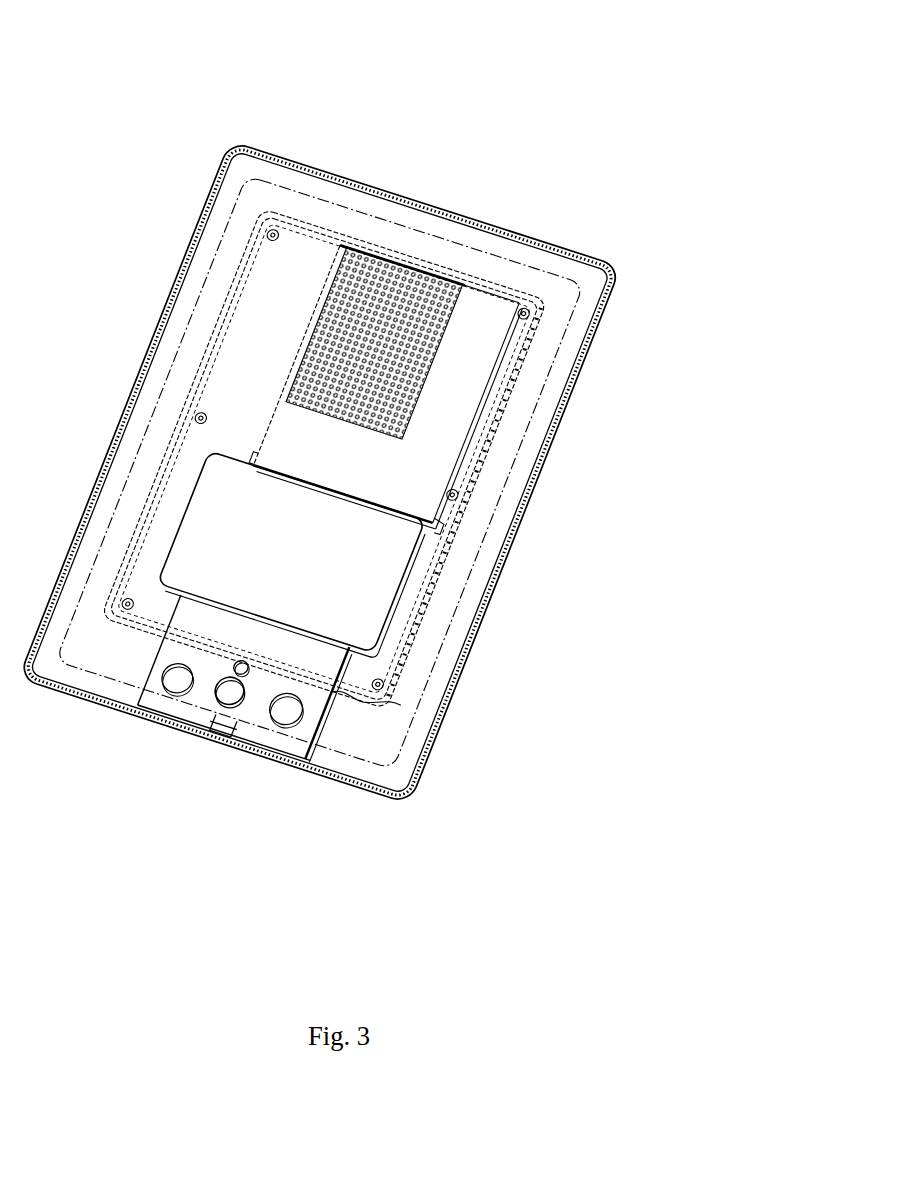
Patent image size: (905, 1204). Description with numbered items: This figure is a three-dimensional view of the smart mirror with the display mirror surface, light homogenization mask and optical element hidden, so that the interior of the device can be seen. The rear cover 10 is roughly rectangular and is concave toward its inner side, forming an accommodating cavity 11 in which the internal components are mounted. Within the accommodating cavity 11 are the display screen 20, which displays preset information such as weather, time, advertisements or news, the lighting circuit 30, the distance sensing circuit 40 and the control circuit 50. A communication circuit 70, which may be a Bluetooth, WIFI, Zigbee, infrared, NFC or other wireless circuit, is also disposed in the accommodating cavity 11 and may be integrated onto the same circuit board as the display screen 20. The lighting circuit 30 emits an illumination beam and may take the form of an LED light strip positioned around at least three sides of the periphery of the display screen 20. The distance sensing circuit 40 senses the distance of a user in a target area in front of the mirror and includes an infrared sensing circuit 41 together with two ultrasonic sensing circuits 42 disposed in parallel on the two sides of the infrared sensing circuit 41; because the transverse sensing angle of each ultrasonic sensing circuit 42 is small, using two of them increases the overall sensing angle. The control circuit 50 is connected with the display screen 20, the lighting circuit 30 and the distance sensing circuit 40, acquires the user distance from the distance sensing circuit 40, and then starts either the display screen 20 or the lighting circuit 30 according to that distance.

The rear cover 10 is at (585, 252).
The accommodating cavity 11 is at (286, 270).
The display screen 20 is at (392, 250).
The lighting circuit 30 is at (490, 462).
The distance sensing circuit 40 is at (183, 764).
The infrared sensing circuit 41 is at (221, 724).
The ultrasonic sensing circuit 42 is at (177, 683).
The control circuit 50 is at (338, 583).
The communication circuit 70 is at (493, 300).